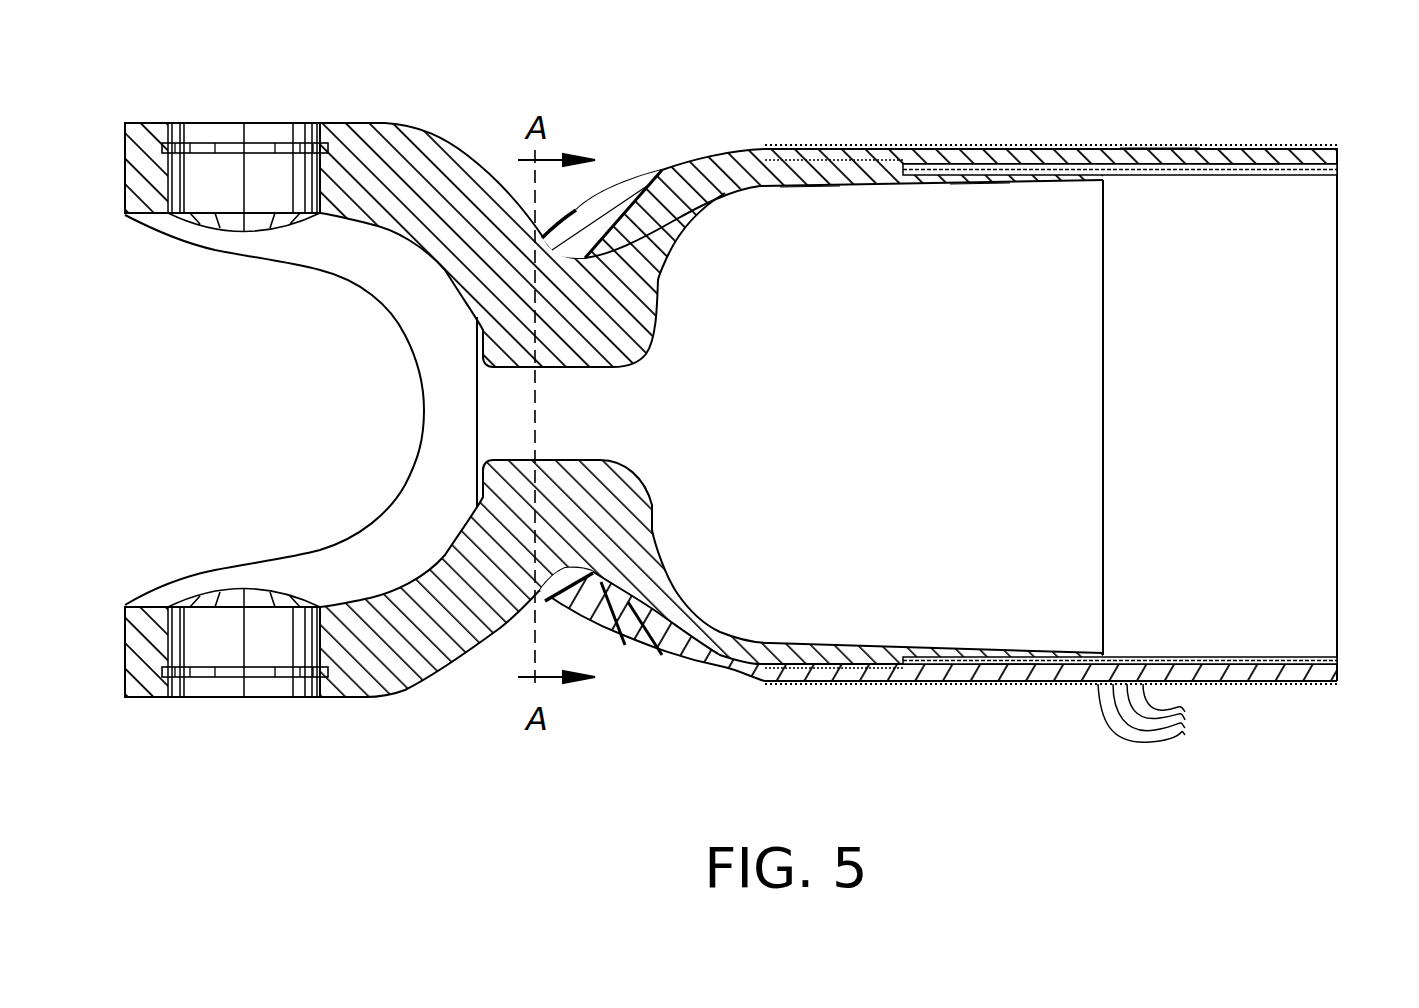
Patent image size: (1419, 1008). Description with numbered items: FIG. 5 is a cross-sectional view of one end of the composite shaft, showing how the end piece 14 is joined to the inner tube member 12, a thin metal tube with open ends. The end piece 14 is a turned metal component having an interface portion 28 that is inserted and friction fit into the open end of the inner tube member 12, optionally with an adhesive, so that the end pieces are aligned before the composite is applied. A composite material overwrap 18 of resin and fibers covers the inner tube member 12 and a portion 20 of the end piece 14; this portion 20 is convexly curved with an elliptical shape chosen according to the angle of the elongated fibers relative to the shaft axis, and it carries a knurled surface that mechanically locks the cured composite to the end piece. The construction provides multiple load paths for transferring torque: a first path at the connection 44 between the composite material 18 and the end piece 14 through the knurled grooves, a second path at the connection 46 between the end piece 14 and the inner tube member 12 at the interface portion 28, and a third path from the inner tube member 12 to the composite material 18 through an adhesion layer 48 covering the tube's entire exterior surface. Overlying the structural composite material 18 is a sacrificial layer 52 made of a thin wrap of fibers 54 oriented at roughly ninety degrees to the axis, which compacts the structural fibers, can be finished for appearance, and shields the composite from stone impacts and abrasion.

The inner tube member 12 is at (1290, 174).
The end piece 14 is at (664, 711).
The composite material overwrap 18 is at (679, 163).
The portion of the end piece 20 is at (639, 197).
The interface portion 28 is at (1070, 180).
The connection 44 is at (810, 222).
The connection 46 is at (982, 218).
The adhesion layer 48 is at (1243, 165).
The sacrificial layer 52 is at (1152, 150).
The fibers 54 is at (1185, 735).